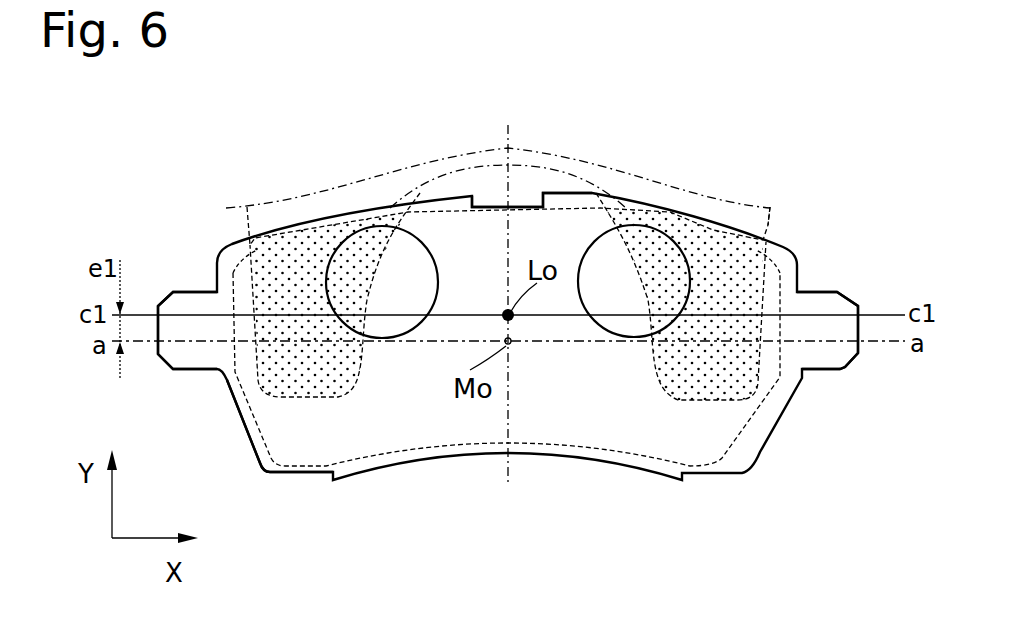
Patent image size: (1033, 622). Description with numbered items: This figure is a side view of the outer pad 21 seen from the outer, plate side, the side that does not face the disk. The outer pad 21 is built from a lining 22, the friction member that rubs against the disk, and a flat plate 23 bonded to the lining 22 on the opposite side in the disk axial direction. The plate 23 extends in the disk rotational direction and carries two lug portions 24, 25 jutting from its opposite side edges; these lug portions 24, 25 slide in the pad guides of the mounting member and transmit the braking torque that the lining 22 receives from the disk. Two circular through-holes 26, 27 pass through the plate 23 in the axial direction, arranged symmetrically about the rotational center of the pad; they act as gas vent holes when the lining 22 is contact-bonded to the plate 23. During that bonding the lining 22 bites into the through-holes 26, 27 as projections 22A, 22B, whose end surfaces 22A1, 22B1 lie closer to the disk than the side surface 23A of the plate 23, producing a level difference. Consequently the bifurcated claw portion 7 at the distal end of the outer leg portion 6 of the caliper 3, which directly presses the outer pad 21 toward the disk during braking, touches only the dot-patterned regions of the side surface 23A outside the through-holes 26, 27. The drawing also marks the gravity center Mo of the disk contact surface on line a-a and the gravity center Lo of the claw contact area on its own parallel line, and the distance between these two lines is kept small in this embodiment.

The caliper 3 is at (554, 158).
The outer leg portion 6 is at (465, 150).
The claw portion 7 is at (775, 226).
The outer pad 21 is at (602, 178).
The lining 22 is at (233, 273).
The projection 22A is at (374, 364).
The end surface 22A1 is at (402, 295).
The projection 22B is at (676, 364).
The end surface 22B1 is at (617, 297).
The plate 23 is at (732, 444).
The side surface 23A is at (308, 432).
The lug portion 24 is at (838, 294).
The lug portion 25 is at (187, 303).
The through-hole 26 is at (333, 297).
The through-hole 27 is at (688, 296).